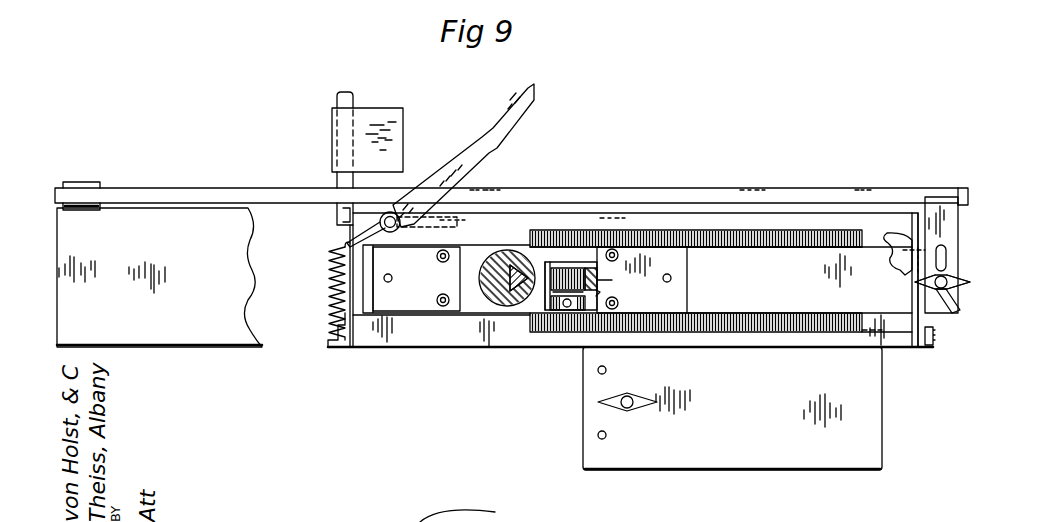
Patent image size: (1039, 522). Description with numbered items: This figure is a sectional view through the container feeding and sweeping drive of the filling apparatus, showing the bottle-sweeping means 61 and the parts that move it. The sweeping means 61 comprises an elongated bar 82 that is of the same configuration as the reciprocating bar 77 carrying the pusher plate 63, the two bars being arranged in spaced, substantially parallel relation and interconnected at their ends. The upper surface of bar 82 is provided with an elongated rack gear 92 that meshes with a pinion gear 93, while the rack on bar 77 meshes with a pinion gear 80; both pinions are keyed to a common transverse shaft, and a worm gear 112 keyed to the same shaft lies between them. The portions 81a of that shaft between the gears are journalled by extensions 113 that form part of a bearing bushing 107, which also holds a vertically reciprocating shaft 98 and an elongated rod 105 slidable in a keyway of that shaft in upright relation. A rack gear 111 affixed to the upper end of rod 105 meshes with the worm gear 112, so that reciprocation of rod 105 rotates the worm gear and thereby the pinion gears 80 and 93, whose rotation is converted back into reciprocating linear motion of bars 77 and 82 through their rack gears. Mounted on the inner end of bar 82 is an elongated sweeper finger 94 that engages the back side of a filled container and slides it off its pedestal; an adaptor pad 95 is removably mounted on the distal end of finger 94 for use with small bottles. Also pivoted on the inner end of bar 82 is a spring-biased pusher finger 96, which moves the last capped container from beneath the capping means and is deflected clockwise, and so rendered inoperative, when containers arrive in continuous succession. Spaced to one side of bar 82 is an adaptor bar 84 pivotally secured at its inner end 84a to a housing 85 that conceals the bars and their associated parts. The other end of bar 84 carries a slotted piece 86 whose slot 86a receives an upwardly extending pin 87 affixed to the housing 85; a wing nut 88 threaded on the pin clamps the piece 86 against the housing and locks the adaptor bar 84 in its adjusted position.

The bottle-sweeping means 61 is at (760, 186).
The pusher plate 63 is at (778, 416).
The reciprocating bar 77 is at (900, 337).
The pinion gear 80 is at (546, 328).
The shaft portions 81a is at (598, 283).
The elongated bar 82 is at (808, 228).
The adaptor bar 84 is at (897, 202).
The inner end of adaptor bar 84a is at (88, 192).
The housing 85 is at (218, 260).
The slotted piece 86 is at (950, 238).
The slot 86a is at (946, 262).
The pin 87 is at (951, 297).
The wing nut 88 is at (955, 281).
The rack gear 92 is at (655, 236).
The pinion gear 93 is at (573, 272).
The sweeper finger 94 is at (352, 96).
The adaptor pad 95 is at (385, 144).
The pusher finger 96 is at (525, 110).
The shaft 98 is at (478, 300).
The rod 105 is at (503, 313).
The bearing bushing 107 is at (482, 253).
The rack gear 111 is at (612, 282).
The worm gear 112 is at (548, 296).
The extensions 113 is at (562, 264).